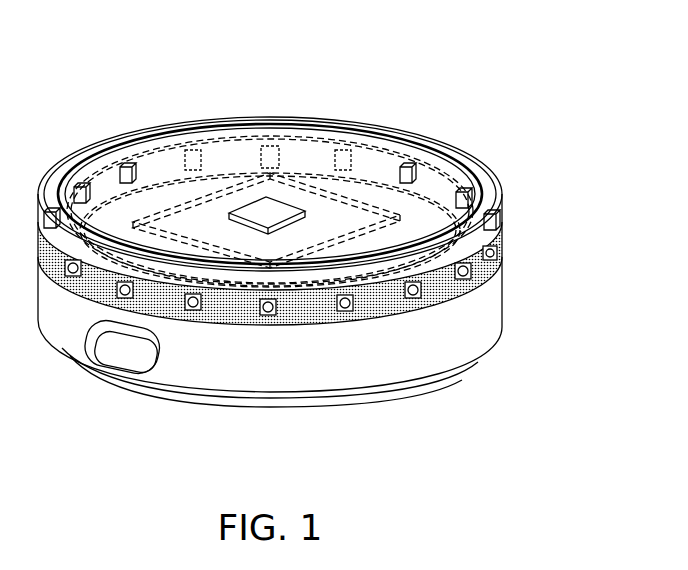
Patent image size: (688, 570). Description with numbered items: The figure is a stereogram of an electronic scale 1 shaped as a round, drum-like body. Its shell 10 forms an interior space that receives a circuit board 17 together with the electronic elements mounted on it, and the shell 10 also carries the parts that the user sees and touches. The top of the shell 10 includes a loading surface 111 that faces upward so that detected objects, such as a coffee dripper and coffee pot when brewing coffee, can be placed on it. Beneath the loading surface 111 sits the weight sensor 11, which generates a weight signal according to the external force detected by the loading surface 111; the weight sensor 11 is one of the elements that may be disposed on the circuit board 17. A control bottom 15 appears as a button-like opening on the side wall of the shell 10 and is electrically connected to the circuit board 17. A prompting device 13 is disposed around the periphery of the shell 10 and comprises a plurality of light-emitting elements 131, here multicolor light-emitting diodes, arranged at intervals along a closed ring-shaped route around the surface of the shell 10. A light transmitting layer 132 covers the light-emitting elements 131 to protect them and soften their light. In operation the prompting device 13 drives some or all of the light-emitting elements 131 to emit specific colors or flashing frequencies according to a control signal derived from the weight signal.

The electronic scale 1 is at (38, 29).
The shell 10 is at (487, 301).
The weight sensor 11 is at (255, 172).
The prompting device 13 is at (503, 238).
The control bottom 15 is at (122, 350).
The circuit board 17 is at (342, 208).
The loading surface 111 is at (430, 210).
The light-emitting elements 131 is at (130, 163).
The light transmitting layer 132 is at (310, 312).